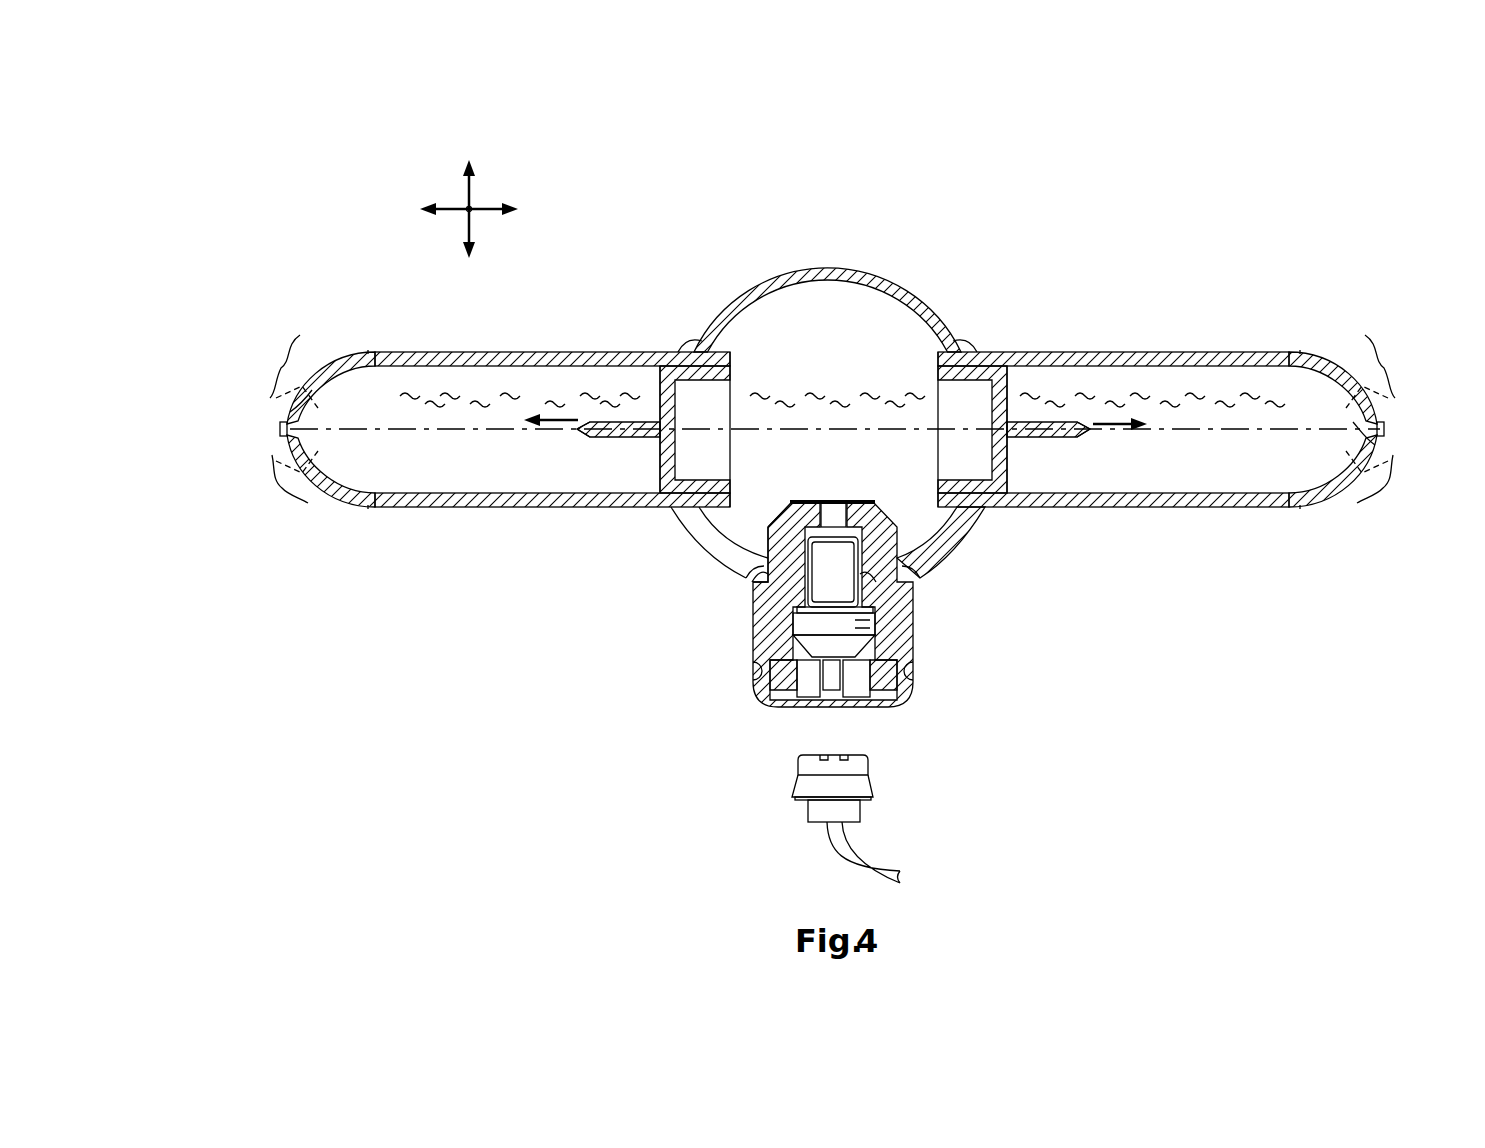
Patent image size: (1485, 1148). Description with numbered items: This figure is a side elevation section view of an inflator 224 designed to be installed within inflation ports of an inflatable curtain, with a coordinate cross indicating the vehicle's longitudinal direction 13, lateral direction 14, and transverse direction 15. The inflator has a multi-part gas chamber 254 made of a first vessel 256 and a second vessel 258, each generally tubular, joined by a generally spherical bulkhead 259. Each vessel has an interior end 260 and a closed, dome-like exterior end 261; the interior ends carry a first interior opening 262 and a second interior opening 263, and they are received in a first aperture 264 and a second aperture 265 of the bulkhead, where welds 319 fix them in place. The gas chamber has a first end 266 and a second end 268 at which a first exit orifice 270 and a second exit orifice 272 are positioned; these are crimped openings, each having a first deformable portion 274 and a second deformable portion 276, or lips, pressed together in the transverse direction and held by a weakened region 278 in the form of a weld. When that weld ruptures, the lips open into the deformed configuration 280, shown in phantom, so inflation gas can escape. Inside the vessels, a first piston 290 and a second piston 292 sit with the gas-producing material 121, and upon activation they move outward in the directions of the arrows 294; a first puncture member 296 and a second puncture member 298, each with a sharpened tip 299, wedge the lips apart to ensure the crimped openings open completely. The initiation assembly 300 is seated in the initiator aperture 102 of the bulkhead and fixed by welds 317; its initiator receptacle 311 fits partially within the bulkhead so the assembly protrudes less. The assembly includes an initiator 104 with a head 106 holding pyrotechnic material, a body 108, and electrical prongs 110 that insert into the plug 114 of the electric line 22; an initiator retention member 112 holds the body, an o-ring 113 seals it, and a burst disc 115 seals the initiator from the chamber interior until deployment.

The longitudinal direction 13 is at (489, 221).
The lateral direction 14 is at (462, 216).
The transverse direction 15 is at (473, 195).
The electric line 22 is at (832, 862).
The initiator aperture 102 is at (776, 544).
The initiator 104 is at (884, 590).
The head 106 is at (805, 626).
The body 108 is at (805, 650).
The electrical prongs 110 is at (833, 692).
The initiator retention member 112 is at (772, 676).
The o-ring 113 is at (872, 618).
The plug 114 is at (795, 787).
The burst disc 115 is at (838, 502).
The gas-producing material 121 is at (521, 467).
The inflator 224 is at (979, 200).
The gas chamber 254 is at (809, 245).
The first vessel 256 is at (1130, 352).
The second vessel 258 is at (540, 352).
The bulkhead 259 is at (921, 283).
The interior end 260 is at (660, 368).
The exterior end 261 is at (370, 352).
The first interior opening 262 is at (988, 382).
The second interior opening 263 is at (677, 382).
The first aperture 264 is at (964, 494).
The second aperture 265 is at (678, 492).
The first end 266 is at (1300, 507).
The second end 268 is at (365, 507).
The first exit orifice 270 is at (1398, 440).
The second exit orifice 272 is at (272, 410).
The first deformable portion 274 is at (835, 366).
The second deformable portion 276 is at (832, 482).
The weakened region 278 is at (279, 430).
The deformed configuration 280 is at (300, 426).
The first piston 290 is at (1060, 350).
The second piston 292 is at (658, 378).
The arrows 294 is at (531, 417).
The first puncture member 296 is at (1020, 430).
The second puncture member 298 is at (625, 437).
The sharpened tip 299 is at (578, 427).
The initiation assembly 300 is at (945, 682).
The initiator receptacle 311 is at (755, 603).
The welds 317 is at (757, 579).
The welds 319 is at (690, 348).